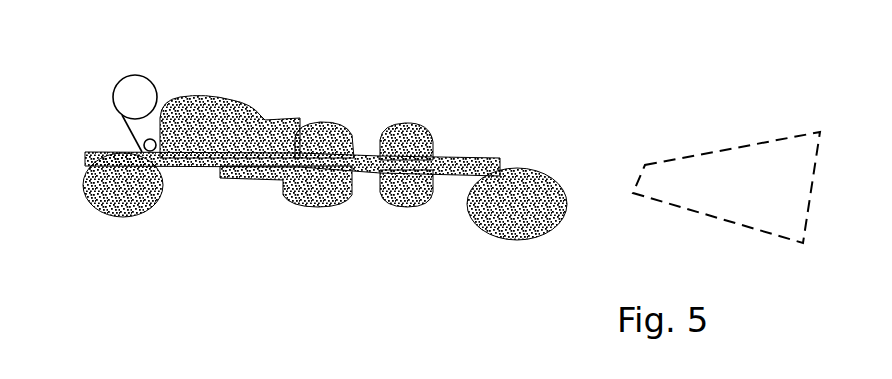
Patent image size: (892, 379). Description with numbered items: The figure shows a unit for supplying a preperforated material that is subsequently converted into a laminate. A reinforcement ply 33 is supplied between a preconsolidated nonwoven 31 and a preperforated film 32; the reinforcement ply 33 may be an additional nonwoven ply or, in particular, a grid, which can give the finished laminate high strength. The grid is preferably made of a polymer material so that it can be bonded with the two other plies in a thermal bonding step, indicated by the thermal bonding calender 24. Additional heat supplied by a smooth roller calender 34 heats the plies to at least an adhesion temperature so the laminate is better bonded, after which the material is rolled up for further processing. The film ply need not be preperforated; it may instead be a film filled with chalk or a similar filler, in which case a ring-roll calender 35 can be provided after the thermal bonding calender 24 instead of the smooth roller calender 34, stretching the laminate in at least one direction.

The thermal bonding calender 24 is at (330, 123).
The preconsolidated nonwoven 31 is at (253, 112).
The preperforated film 32 is at (145, 217).
The reinforcement ply 33 is at (143, 142).
The smooth roller calender 34 is at (407, 208).
The ring-roll calender 35 is at (420, 110).